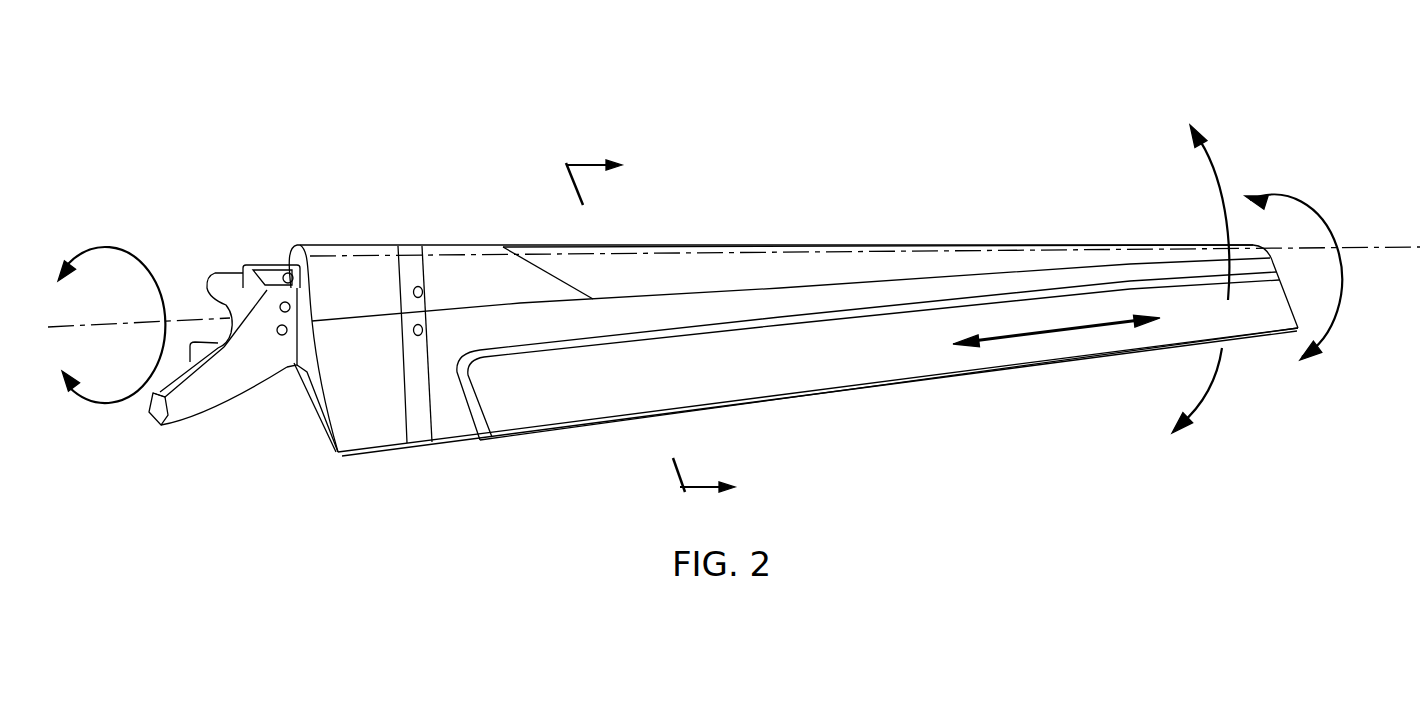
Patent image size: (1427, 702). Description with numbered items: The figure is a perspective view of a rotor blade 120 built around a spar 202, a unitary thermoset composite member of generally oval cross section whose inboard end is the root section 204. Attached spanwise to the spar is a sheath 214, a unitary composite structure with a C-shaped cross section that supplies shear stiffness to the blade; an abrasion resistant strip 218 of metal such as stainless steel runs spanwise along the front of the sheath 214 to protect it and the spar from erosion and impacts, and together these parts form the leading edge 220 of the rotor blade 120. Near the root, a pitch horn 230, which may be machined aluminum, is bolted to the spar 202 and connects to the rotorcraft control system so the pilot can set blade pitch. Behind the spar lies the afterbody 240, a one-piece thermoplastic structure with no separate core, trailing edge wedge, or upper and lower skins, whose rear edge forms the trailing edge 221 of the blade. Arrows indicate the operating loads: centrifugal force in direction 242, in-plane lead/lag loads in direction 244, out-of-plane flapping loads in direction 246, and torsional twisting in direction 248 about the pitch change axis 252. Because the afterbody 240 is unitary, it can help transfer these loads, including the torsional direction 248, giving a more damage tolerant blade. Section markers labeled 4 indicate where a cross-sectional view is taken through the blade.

The rotor blade 120 is at (370, 108).
The spar 202 is at (295, 365).
The root section 204 is at (272, 262).
The sheath 214 is at (462, 262).
The abrasion resistant strip 218 is at (703, 253).
The leading edge 220 is at (815, 245).
The trailing edge 221 is at (915, 382).
The pitch horn 230 is at (197, 403).
The afterbody 240 is at (615, 413).
The direction of centrifugal forces 242 is at (1057, 333).
The direction of lead/lag loads 244 is at (1312, 218).
The direction of flapping loads 246 is at (1216, 378).
The torsional direction 248 is at (90, 248).
The pitch change axis 252 is at (1378, 248).
The section line 4- 4 is at (660, 329).